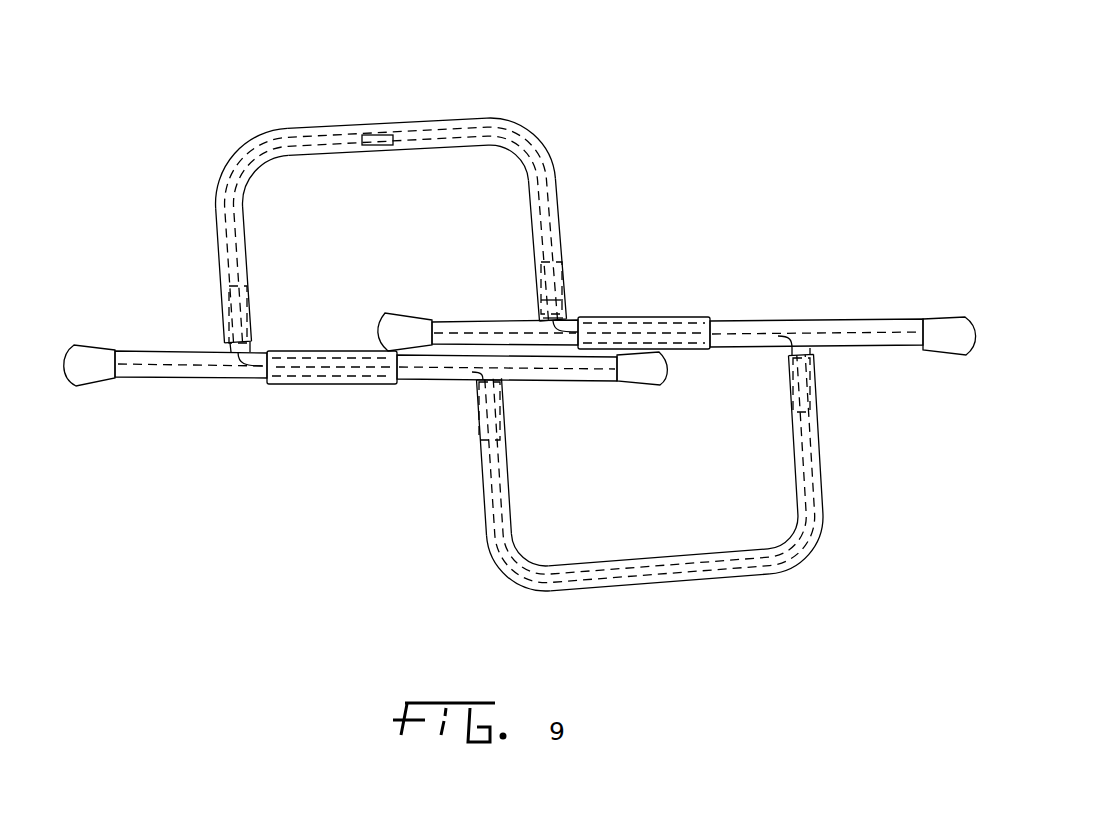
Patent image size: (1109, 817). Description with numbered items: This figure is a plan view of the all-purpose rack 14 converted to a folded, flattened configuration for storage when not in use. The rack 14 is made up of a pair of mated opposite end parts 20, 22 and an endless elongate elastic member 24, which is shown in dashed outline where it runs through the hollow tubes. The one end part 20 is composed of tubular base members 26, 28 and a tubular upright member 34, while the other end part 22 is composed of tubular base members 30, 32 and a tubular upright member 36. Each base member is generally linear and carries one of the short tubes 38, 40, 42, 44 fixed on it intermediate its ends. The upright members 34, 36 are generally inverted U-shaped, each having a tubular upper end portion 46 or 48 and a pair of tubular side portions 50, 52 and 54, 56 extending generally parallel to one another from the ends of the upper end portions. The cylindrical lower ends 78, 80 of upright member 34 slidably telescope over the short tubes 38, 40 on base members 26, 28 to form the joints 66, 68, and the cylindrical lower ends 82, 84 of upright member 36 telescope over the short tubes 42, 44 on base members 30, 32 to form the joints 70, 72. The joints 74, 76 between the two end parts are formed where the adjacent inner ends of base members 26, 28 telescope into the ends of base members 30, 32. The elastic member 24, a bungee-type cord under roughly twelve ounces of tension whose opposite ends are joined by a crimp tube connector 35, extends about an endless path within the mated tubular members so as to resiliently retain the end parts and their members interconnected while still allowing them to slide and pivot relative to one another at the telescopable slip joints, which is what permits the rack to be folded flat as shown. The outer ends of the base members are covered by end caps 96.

The all-purpose rack 14 is at (710, 194).
The end part 20 is at (557, 164).
The end part 22 is at (829, 516).
The endless elongate elastic member 24 is at (306, 146).
The tubular base member 26 is at (212, 372).
The tubular base member 28 is at (452, 320).
The tubular base member 30 is at (528, 379).
The tubular base member 32 is at (812, 322).
The tubular upright member 34 is at (509, 120).
The crimp tube connector 35 is at (378, 136).
The tubular upright member 36 is at (545, 590).
The short tube 38 is at (232, 320).
The short tube 40 is at (558, 253).
The short tube 42 is at (500, 423).
The short tube 44 is at (792, 400).
The tubular upper end portion 46 is at (337, 128).
The tubular upper end portion 48 is at (635, 587).
The tubular side portion 50 is at (222, 253).
The tubular side portion 52 is at (557, 198).
The tubular side portion 54 is at (482, 503).
The tubular side portion 56 is at (822, 445).
The slidable and pivotable joint 66 is at (220, 297).
The slidable and pivotable joint 68 is at (569, 281).
The slidable and pivotable joint 70 is at (472, 408).
The slidable and pivotable joint 72 is at (816, 378).
The slidable and pivotable joint 74 is at (327, 386).
The slidable and pivotable joint 76 is at (658, 310).
The cylindrical lower end 78 is at (252, 332).
The cylindrical lower end 80 is at (541, 299).
The cylindrical lower end 82 is at (478, 425).
The cylindrical lower end 84 is at (788, 358).
The end cap 96 is at (85, 376).